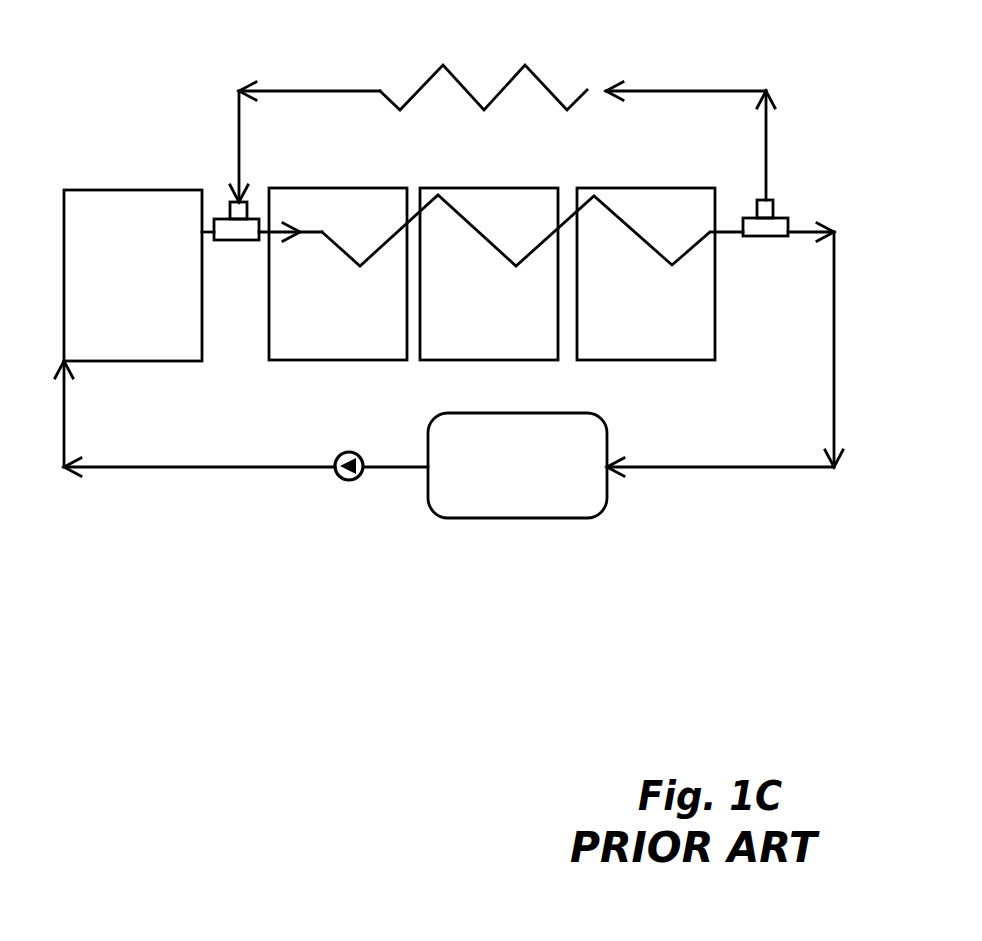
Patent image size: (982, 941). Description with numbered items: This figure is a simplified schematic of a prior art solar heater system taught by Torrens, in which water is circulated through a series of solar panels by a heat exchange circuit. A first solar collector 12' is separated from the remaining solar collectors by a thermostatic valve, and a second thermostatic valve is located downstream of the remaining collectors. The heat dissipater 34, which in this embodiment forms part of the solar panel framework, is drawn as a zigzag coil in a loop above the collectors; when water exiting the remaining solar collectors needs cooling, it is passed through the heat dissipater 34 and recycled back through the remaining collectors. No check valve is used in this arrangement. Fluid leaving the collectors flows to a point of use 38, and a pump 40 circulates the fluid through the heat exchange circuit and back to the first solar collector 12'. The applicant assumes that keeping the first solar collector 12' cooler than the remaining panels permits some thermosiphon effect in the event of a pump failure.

The first solar collector 12' is at (133, 243).
The heat dissipater 34 is at (462, 92).
The point of use 38 is at (525, 480).
The pump 40 is at (348, 481).